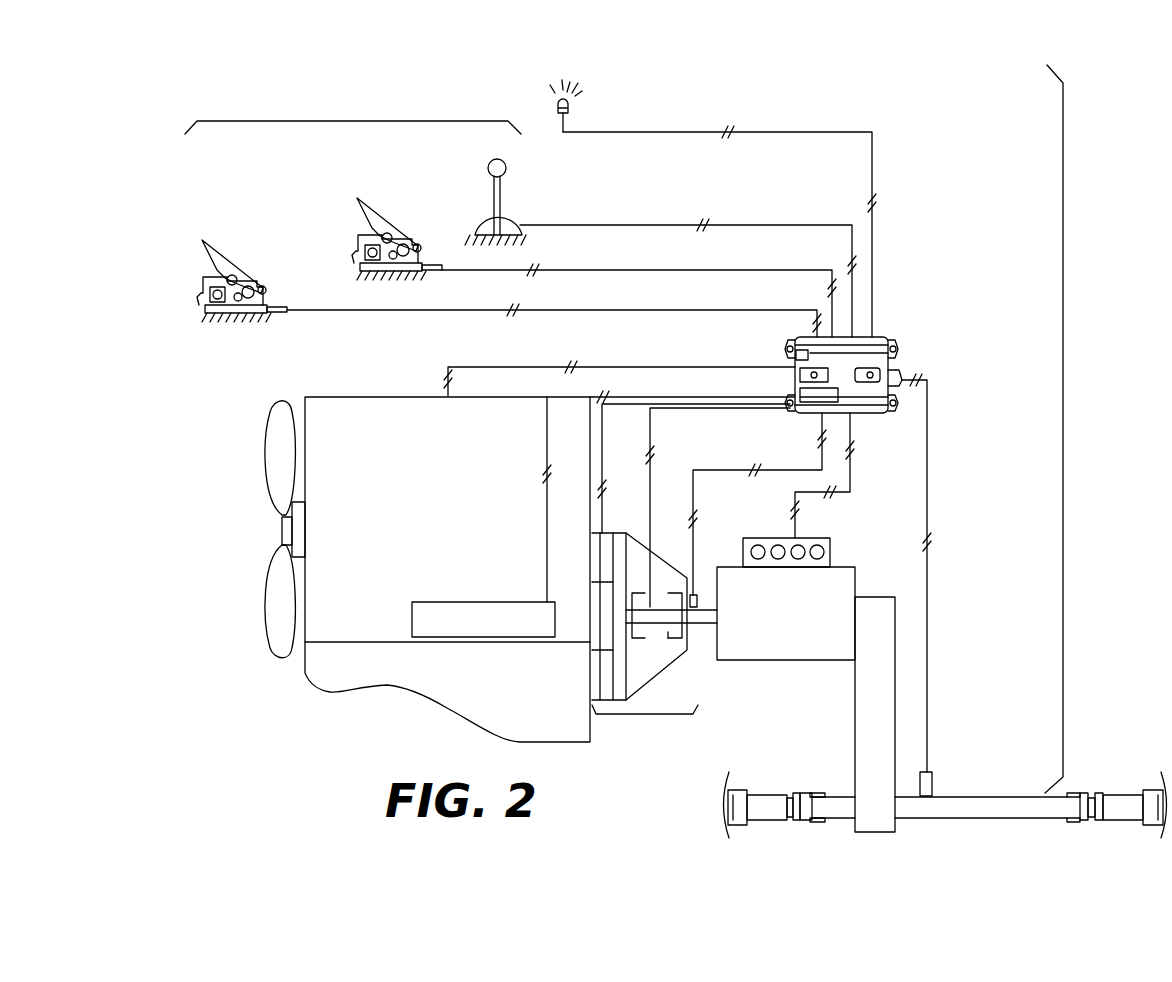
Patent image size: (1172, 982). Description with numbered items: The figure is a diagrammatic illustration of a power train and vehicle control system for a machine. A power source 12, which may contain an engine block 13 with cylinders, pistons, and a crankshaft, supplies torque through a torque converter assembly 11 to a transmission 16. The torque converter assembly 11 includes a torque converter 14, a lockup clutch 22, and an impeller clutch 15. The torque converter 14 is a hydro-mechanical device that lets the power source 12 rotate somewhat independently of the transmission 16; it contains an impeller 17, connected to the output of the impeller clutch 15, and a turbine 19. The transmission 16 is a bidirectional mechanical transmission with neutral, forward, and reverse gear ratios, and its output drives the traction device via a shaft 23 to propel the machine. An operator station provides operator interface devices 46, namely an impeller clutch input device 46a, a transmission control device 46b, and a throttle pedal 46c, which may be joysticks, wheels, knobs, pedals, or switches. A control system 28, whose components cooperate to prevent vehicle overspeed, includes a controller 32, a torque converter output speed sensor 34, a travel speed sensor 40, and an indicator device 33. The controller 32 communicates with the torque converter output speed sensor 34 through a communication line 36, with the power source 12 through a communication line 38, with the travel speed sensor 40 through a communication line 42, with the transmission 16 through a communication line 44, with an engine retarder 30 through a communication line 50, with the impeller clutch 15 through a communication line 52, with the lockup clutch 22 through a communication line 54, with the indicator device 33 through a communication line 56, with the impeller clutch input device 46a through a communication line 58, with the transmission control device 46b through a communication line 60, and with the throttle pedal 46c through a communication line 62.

The torque converter assembly 11 is at (643, 714).
The power source 12 is at (257, 522).
The engine block 13 is at (345, 397).
The torque converter 14 is at (649, 549).
The impeller clutch 15 is at (603, 656).
The transmission 16 is at (847, 565).
The impeller 17 is at (644, 640).
The turbine 19 is at (668, 640).
The lockup clutch 22 is at (657, 605).
The shaft 23 is at (810, 792).
The control system 28 is at (1063, 415).
The engine retarder 30 is at (418, 602).
The controller 32 is at (887, 337).
The indicator device 33 is at (568, 107).
The torque converter output speed sensor 34 is at (695, 595).
The communication line 36 is at (776, 472).
The communication line 38 is at (526, 367).
The travel speed sensor 40 is at (932, 780).
The communication line 42 is at (927, 600).
The communication line 44 is at (850, 470).
The operator interface devices 46 is at (373, 121).
The impeller clutch input device 46a is at (238, 262).
The transmission control device 46b is at (494, 198).
The throttle pedal 46c is at (355, 198).
The communication line 50 is at (547, 513).
The communication line 52 is at (602, 462).
The communication line 54 is at (652, 488).
The communication line 56 is at (742, 132).
The communication line 58 is at (440, 312).
The communication line 60 is at (731, 225).
The communication line 62 is at (612, 270).